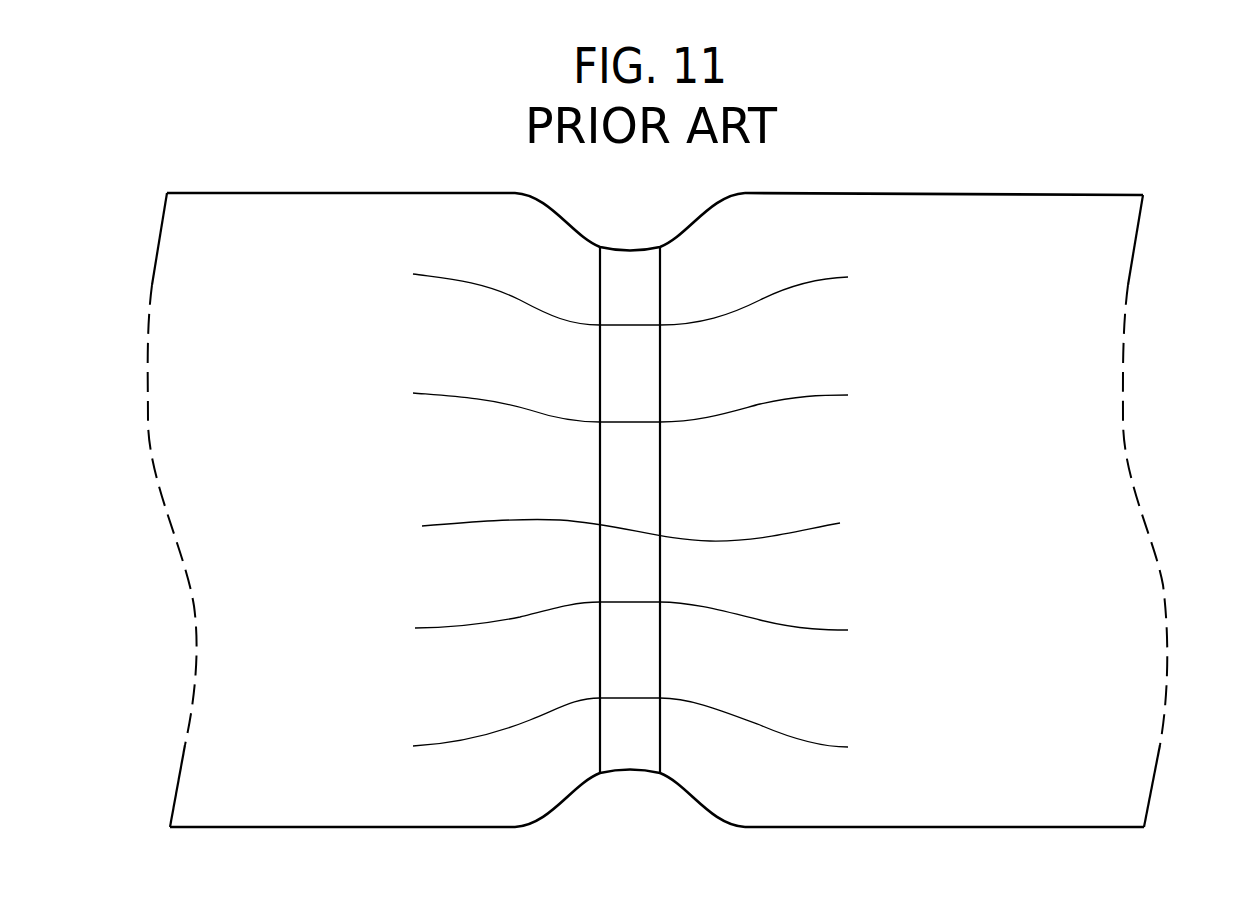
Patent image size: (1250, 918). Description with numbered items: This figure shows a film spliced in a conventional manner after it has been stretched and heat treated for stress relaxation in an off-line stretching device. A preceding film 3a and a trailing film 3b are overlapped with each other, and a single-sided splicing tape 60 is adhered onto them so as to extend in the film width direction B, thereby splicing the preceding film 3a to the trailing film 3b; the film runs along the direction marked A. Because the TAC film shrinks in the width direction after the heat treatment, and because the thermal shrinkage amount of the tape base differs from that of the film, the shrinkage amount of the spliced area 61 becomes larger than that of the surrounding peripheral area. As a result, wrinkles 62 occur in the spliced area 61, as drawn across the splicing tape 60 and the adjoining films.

The preceding film 3a is at (876, 218).
The trailing film 3b is at (355, 228).
The single-sided splicing tape 60 is at (625, 270).
The spliced area 61 is at (600, 806).
The wrinkles 62 is at (792, 283).
The direction A is at (1240, 160).
The film width direction B is at (1034, 220).